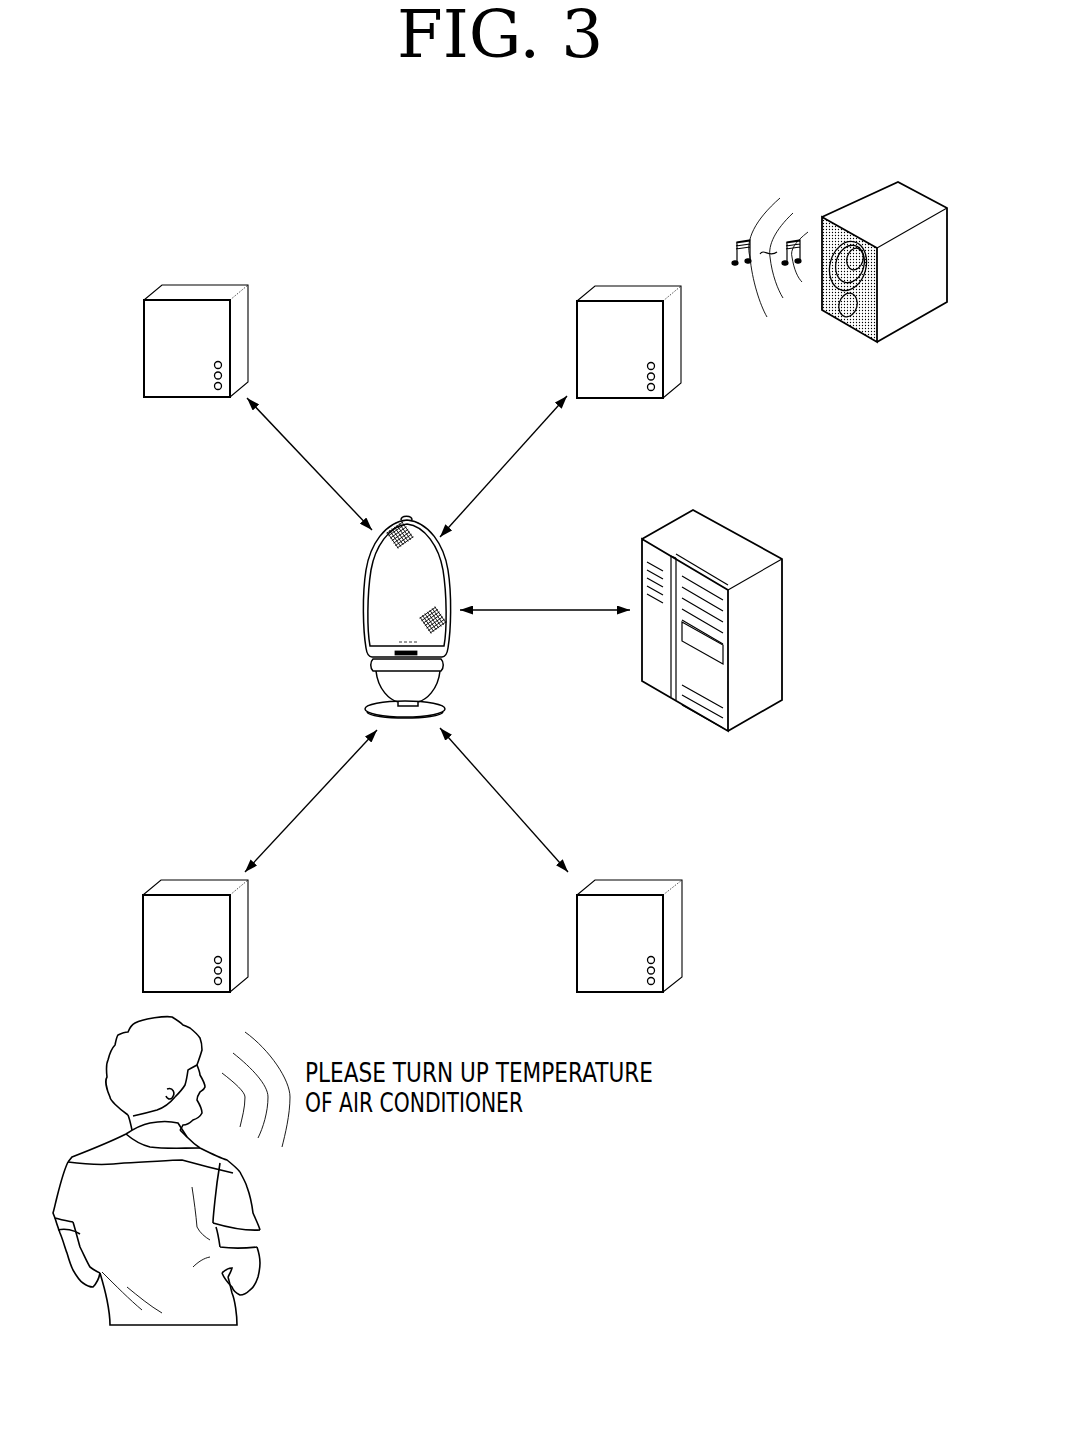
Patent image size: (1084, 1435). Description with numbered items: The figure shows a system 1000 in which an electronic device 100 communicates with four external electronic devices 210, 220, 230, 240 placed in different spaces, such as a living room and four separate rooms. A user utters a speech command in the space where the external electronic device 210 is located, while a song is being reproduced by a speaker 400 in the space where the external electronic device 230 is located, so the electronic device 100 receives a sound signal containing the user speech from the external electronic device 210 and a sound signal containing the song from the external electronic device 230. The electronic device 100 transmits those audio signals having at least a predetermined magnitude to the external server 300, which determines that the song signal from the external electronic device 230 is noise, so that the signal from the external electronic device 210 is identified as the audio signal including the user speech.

The system 1000 is at (522, 173).
The electronic device 100 is at (362, 608).
The external electronic device 210 is at (232, 879).
The external electronic device 220 is at (665, 879).
The external electronic device 230 is at (665, 285).
The external electronic device 240 is at (232, 285).
The external server 300 is at (710, 525).
The speaker 400 is at (903, 182).